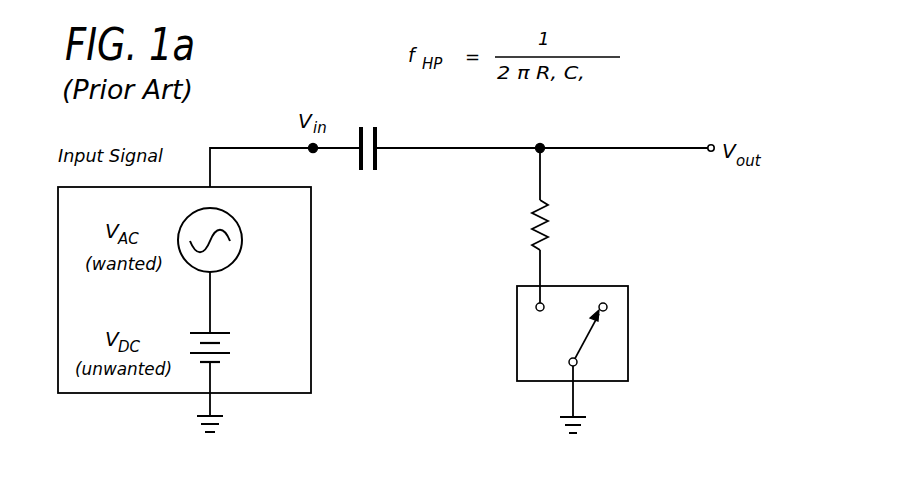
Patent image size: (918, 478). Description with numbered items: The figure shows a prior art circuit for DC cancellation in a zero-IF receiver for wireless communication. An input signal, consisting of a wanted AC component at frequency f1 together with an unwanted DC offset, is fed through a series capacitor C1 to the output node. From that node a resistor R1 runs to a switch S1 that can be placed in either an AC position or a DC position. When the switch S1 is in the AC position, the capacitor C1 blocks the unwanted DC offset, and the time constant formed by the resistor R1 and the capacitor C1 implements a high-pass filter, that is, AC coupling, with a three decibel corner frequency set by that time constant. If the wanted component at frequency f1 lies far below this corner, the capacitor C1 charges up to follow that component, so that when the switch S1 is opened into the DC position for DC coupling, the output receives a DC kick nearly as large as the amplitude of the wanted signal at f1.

The capacitor C1 is at (385, 157).
The resistor R1 is at (559, 225).
The switch S1 is at (572, 359).
The frequency of the wanted signal component f1 is at (228, 240).